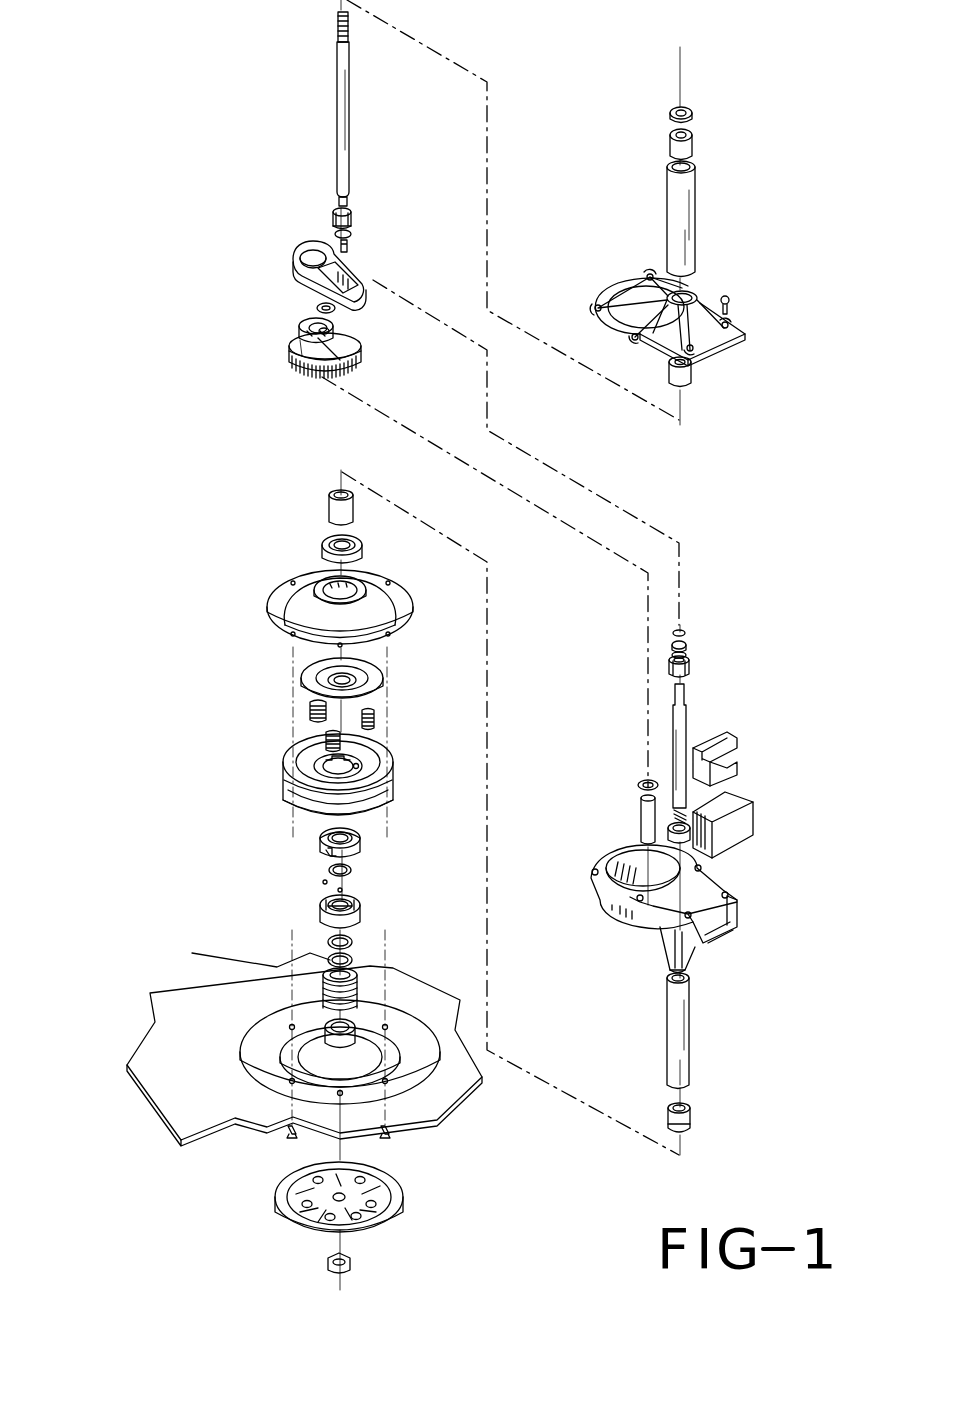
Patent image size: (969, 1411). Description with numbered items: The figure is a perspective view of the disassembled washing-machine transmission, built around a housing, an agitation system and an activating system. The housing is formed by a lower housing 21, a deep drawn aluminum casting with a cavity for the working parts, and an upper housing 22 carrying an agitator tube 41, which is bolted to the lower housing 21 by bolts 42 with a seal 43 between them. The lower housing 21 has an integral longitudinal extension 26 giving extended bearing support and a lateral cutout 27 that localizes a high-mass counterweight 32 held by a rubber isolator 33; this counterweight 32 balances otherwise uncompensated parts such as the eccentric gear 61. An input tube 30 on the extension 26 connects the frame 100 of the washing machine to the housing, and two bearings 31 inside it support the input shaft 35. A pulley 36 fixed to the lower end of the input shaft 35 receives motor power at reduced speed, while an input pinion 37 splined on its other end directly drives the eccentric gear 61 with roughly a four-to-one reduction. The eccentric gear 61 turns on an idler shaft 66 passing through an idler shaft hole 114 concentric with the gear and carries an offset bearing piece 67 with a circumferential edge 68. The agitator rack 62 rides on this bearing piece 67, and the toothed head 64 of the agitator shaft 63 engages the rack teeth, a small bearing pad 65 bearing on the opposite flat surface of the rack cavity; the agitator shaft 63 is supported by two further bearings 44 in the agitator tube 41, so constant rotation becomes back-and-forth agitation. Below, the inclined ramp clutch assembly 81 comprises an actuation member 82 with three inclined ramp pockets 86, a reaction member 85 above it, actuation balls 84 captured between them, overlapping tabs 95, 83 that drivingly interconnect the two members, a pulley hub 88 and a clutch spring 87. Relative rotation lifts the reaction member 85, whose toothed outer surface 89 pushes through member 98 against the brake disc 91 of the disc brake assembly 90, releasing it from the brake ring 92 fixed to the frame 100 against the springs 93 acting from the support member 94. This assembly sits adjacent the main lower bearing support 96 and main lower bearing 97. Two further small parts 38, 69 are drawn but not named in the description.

The lower housing 21 is at (605, 900).
The upper housing 22 is at (722, 334).
The longitudinal extension 26 is at (668, 950).
The lateral cutout 27 is at (718, 935).
The input tube 30 is at (672, 1020).
The bearings 31 is at (688, 838).
The counterweight 32 is at (740, 805).
The rubber isolator 33 is at (730, 760).
The input shaft 35 is at (690, 718).
The pulley 36 is at (280, 1195).
The input pinion 37 is at (692, 668).
The washer 38 is at (686, 632).
The agitator tube 41 is at (672, 205).
The bolts 42 is at (730, 302).
The seal 43 is at (732, 893).
The bearings 44 is at (672, 145).
The eccentric gear 61 is at (298, 356).
The agitator rack 62 is at (295, 262).
The agitator shaft 63 is at (338, 156).
The toothed head 64 is at (333, 218).
The bearing pad 65 is at (338, 243).
The idler shaft 66 is at (640, 815).
The bearing piece 67 is at (300, 330).
The circumferential edge 68 is at (350, 350).
The washer 69 is at (316, 306).
The inclined ramp clutch assembly 81 is at (145, 853).
The actuation member 82 is at (322, 912).
The tab 83 is at (362, 924).
The actuation balls 84 is at (355, 878).
The reaction member 85 is at (322, 838).
The inclined ramp pockets 86 is at (358, 906).
The clutch spring 87 is at (325, 985).
The pulley hub 88 is at (330, 1025).
The toothed outer surface 89 is at (370, 836).
The disc brake assembly 90 is at (145, 748).
The brake disc 91 is at (398, 790).
The brake ring 92 is at (286, 1052).
The springs 93 is at (310, 708).
The support member 94 is at (308, 678).
The tab 95 is at (362, 850).
The main lower bearing support 96 is at (275, 598).
The main lower bearing 97 is at (322, 546).
The member 98 is at (292, 760).
The frame 100 is at (160, 1078).
The idler shaft hole 114 is at (330, 330).